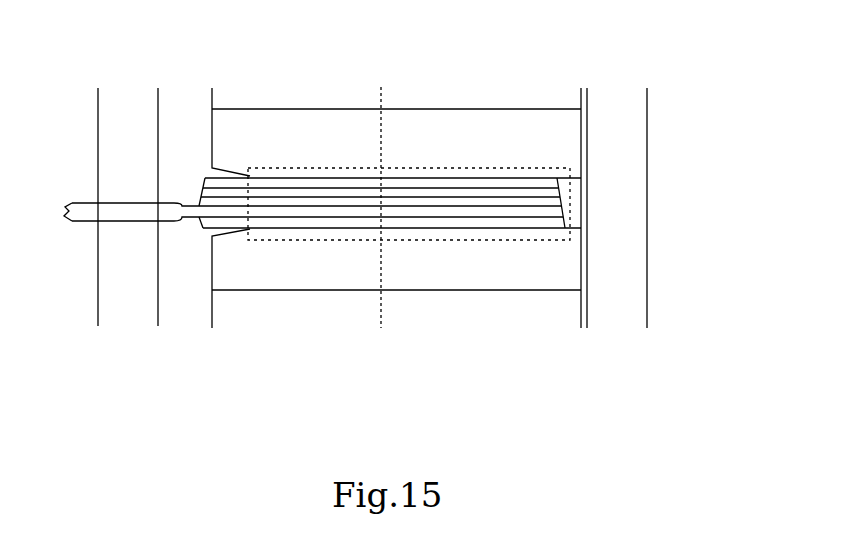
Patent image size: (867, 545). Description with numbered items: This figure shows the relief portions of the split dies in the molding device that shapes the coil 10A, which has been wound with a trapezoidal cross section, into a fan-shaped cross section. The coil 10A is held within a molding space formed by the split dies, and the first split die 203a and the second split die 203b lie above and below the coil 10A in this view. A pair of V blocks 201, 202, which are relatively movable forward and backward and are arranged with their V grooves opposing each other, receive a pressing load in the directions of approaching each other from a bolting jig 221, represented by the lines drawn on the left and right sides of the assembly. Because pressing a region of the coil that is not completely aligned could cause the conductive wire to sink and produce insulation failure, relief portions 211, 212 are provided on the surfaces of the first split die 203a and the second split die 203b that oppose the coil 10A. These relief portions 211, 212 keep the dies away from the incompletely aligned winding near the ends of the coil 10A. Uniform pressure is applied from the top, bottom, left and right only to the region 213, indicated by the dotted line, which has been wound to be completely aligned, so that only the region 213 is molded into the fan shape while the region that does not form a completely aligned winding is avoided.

The coil 10A is at (335, 217).
The V block 201 is at (572, 100).
The V block 202 is at (573, 307).
The first split die 203a is at (488, 118).
The second split die 203b is at (455, 277).
The relief portion 211 is at (212, 174).
The relief portion 212 is at (215, 234).
The region 213 is at (340, 167).
The bolting jig 221 is at (103, 285).